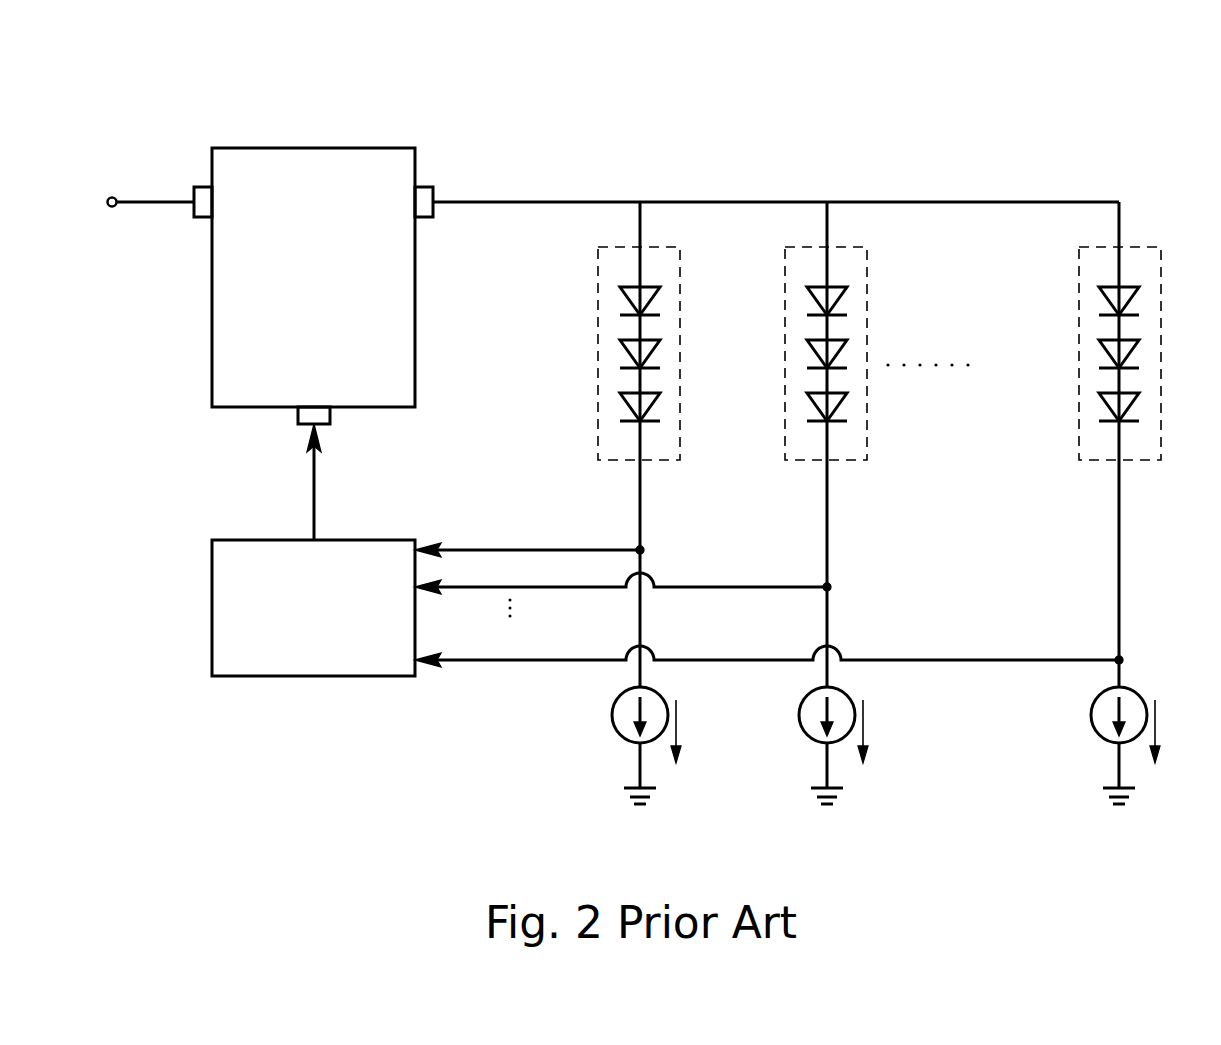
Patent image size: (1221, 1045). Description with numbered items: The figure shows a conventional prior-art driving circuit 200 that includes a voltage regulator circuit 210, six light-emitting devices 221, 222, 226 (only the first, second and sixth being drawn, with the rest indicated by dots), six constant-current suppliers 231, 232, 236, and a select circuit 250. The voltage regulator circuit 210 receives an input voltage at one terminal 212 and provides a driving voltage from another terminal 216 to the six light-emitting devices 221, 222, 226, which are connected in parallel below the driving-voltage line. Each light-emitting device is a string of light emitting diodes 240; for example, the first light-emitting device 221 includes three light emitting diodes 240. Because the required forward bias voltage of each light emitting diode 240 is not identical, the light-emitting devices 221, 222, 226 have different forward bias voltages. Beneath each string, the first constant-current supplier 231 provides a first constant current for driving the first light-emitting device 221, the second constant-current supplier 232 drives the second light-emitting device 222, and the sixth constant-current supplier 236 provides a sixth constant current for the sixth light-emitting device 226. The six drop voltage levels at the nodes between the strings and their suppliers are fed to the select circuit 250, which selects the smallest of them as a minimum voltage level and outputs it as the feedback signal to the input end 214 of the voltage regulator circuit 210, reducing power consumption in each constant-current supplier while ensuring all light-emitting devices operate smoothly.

The driving circuit 200 is at (1075, 124).
The voltage regulator circuit 210 is at (313, 147).
The input terminal 212 is at (201, 186).
The output terminal 216 is at (426, 186).
The input end 214 is at (296, 424).
The select circuit 250 is at (314, 677).
The first light-emitting device 221 is at (596, 351).
The second light-emitting device 222 is at (783, 351).
The sixth light-emitting device 226 is at (1077, 351).
The light emitting diode 240 is at (618, 285).
The first constant-current supplier 231 is at (611, 716).
The second constant-current supplier 232 is at (798, 716).
The sixth constant-current supplier 236 is at (1090, 716).